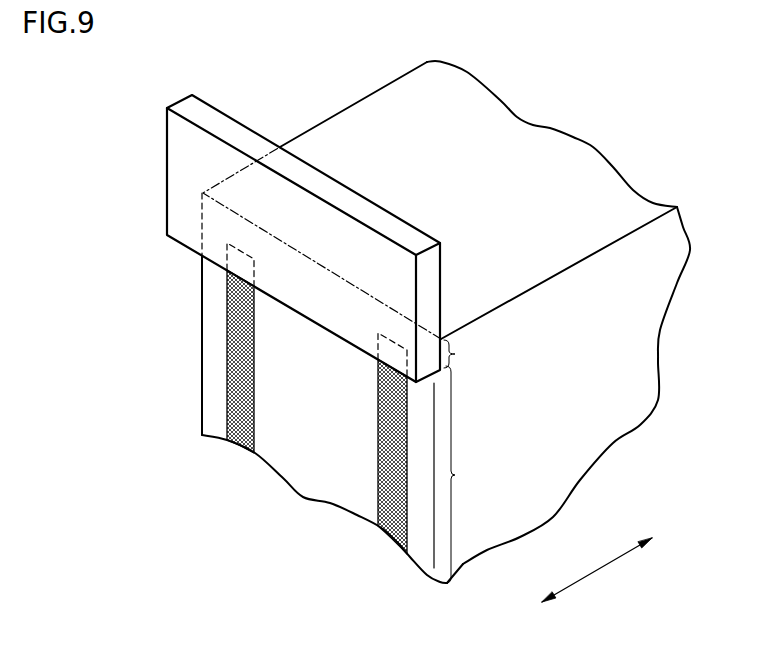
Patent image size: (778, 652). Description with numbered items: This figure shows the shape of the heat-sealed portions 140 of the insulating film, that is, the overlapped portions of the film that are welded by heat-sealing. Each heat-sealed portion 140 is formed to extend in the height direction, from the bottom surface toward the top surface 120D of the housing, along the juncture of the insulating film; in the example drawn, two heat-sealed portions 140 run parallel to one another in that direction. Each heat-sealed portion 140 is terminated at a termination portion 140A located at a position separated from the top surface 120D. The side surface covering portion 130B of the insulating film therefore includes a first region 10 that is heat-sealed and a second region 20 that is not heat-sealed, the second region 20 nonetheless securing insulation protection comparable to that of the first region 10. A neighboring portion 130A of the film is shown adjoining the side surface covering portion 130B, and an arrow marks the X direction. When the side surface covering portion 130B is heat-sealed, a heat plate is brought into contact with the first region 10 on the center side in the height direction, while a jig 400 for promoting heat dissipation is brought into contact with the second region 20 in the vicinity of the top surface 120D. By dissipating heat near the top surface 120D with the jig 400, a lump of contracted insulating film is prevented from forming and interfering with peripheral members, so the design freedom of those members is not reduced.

The jig 400 is at (218, 125).
The top surface 120D is at (353, 130).
The side wall portion 130A is at (622, 348).
The side surface covering portion 130B is at (313, 460).
The heat-sealed portion 140 is at (238, 415).
The termination portion 140A is at (241, 248).
The second region 20 is at (463, 354).
The first region 10 is at (458, 474).
The X direction X is at (597, 572).